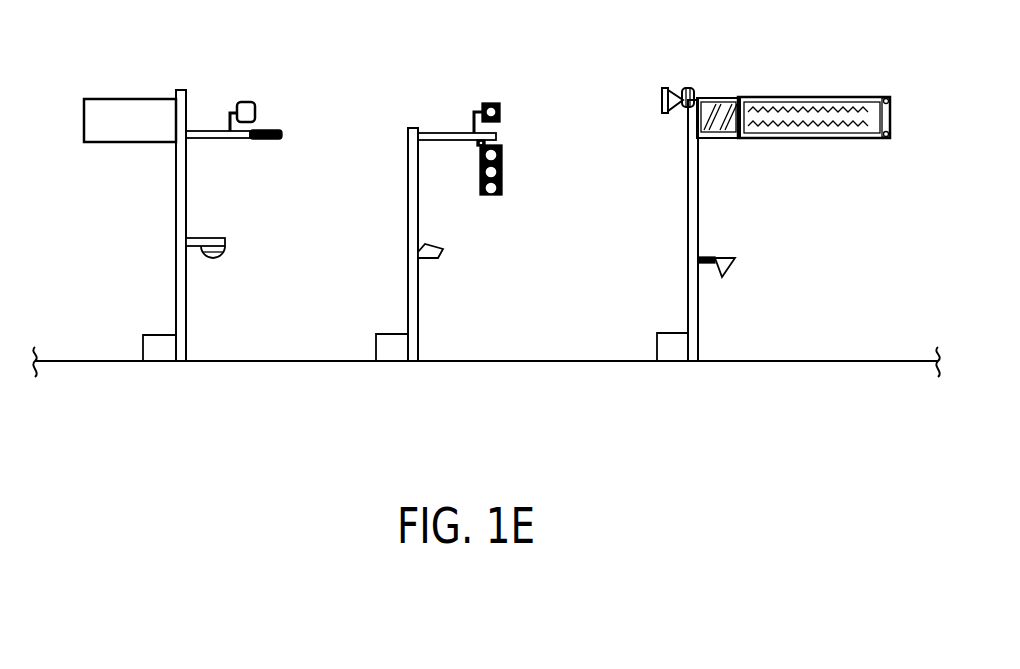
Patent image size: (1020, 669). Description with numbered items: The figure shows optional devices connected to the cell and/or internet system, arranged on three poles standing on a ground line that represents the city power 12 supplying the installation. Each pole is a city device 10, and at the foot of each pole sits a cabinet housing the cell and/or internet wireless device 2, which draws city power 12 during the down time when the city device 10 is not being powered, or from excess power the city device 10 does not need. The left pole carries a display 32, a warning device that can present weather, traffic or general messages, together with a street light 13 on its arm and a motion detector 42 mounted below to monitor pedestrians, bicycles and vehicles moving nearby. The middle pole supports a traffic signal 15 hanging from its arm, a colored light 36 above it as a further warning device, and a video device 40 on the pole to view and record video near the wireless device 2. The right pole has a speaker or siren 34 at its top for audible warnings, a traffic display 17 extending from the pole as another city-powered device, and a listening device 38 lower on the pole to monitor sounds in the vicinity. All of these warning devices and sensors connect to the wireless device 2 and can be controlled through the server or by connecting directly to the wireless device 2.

The cell and/or internet wireless device 2 is at (164, 335).
The city device 10 is at (176, 193).
The city power 12 is at (57, 361).
The street light 13 is at (262, 141).
The traffic signal 15 is at (492, 195).
The traffic display 17 is at (808, 97).
The display 32 is at (131, 97).
The speaker or siren 34 is at (680, 90).
The colored light 36 is at (490, 104).
The listening device 38 is at (735, 260).
The video device 40 is at (437, 258).
The motion detector 42 is at (226, 250).